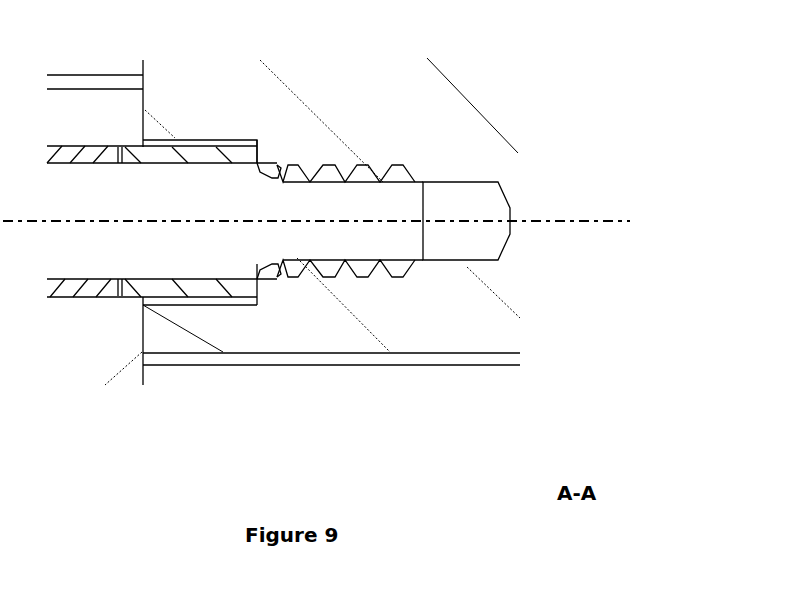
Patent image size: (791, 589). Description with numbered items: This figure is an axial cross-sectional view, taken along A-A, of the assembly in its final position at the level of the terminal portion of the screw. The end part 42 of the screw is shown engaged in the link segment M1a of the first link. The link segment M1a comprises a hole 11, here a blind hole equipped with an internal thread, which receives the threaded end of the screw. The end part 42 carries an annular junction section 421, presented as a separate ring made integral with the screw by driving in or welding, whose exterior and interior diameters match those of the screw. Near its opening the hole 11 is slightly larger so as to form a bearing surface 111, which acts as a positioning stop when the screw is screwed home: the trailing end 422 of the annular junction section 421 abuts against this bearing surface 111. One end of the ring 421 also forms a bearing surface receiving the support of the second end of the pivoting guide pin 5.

The pivoting guide pin 5 is at (56, 283).
The hole 11 is at (467, 198).
The bearing surface 111 is at (257, 158).
The end part 42 is at (407, 237).
The annular junction section 421 is at (204, 285).
The trailing end 422 is at (258, 300).
The link segment M1a is at (479, 335).